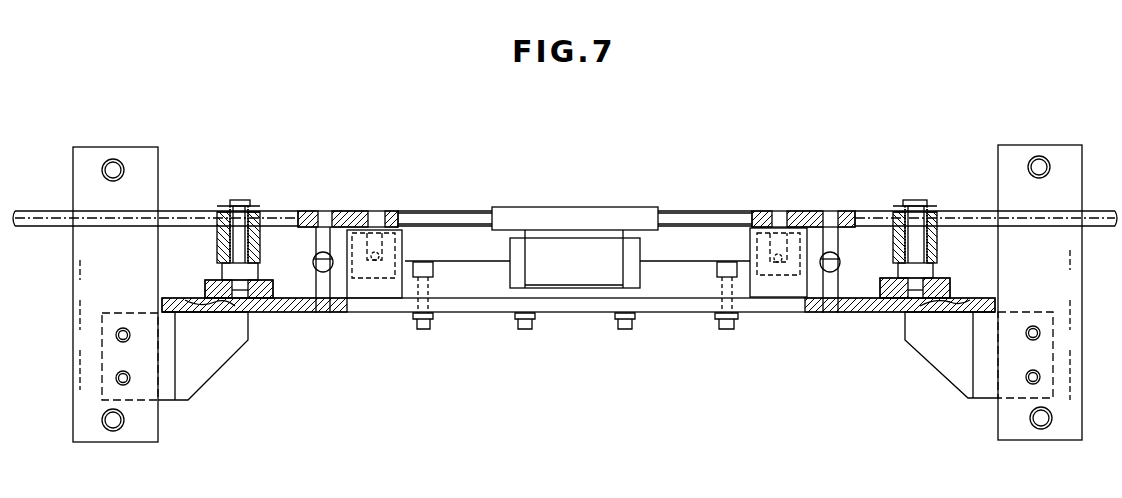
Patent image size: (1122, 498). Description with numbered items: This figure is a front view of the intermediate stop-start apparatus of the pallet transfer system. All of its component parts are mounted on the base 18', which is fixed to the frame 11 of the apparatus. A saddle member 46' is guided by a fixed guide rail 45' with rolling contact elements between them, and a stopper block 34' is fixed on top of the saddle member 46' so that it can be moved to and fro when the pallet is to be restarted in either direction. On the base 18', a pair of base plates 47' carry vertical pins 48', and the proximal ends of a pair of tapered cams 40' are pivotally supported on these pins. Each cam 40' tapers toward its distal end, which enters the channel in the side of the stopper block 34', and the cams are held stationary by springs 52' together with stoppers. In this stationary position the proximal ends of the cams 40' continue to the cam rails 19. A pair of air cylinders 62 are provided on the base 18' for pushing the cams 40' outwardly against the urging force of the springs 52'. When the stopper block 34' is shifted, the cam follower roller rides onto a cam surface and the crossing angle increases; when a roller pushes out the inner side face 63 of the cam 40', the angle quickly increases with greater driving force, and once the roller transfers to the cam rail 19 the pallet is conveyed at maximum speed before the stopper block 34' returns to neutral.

The cam rail 19 is at (39, 218).
The frame 11 is at (95, 292).
The base 18' is at (578, 349).
The cam 40' is at (576, 199).
The inner side face 63 is at (440, 212).
The stopper block 34' is at (584, 201).
The saddle member 46' is at (575, 292).
The guide rail 45' is at (577, 280).
The spring 52' is at (555, 270).
The air cylinder 62 is at (363, 278).
The vertical pin 48' is at (549, 240).
The base plate 47' is at (577, 281).